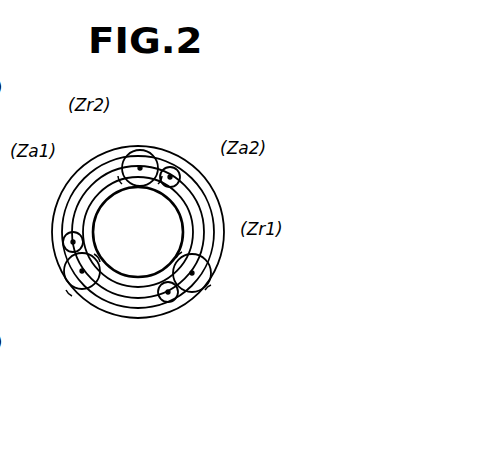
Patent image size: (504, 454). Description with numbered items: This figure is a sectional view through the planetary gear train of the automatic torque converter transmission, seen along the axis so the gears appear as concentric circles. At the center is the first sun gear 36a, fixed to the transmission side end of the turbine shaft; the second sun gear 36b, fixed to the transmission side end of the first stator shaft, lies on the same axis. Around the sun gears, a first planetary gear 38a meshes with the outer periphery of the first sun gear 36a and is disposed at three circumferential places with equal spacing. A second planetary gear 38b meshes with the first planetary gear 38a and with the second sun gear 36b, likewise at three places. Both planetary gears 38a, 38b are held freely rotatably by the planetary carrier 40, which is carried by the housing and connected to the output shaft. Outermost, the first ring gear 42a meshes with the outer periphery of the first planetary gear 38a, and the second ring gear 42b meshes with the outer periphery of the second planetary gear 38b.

The first sun gear 36a is at (90, 203).
The second sun gear 36b is at (184, 197).
The first planetary gear 38a is at (174, 168).
The second planetary gear 38b is at (127, 156).
The planetary carrier 40 is at (107, 312).
The first ring gear 42a is at (221, 205).
The second ring gear 42b is at (118, 152).